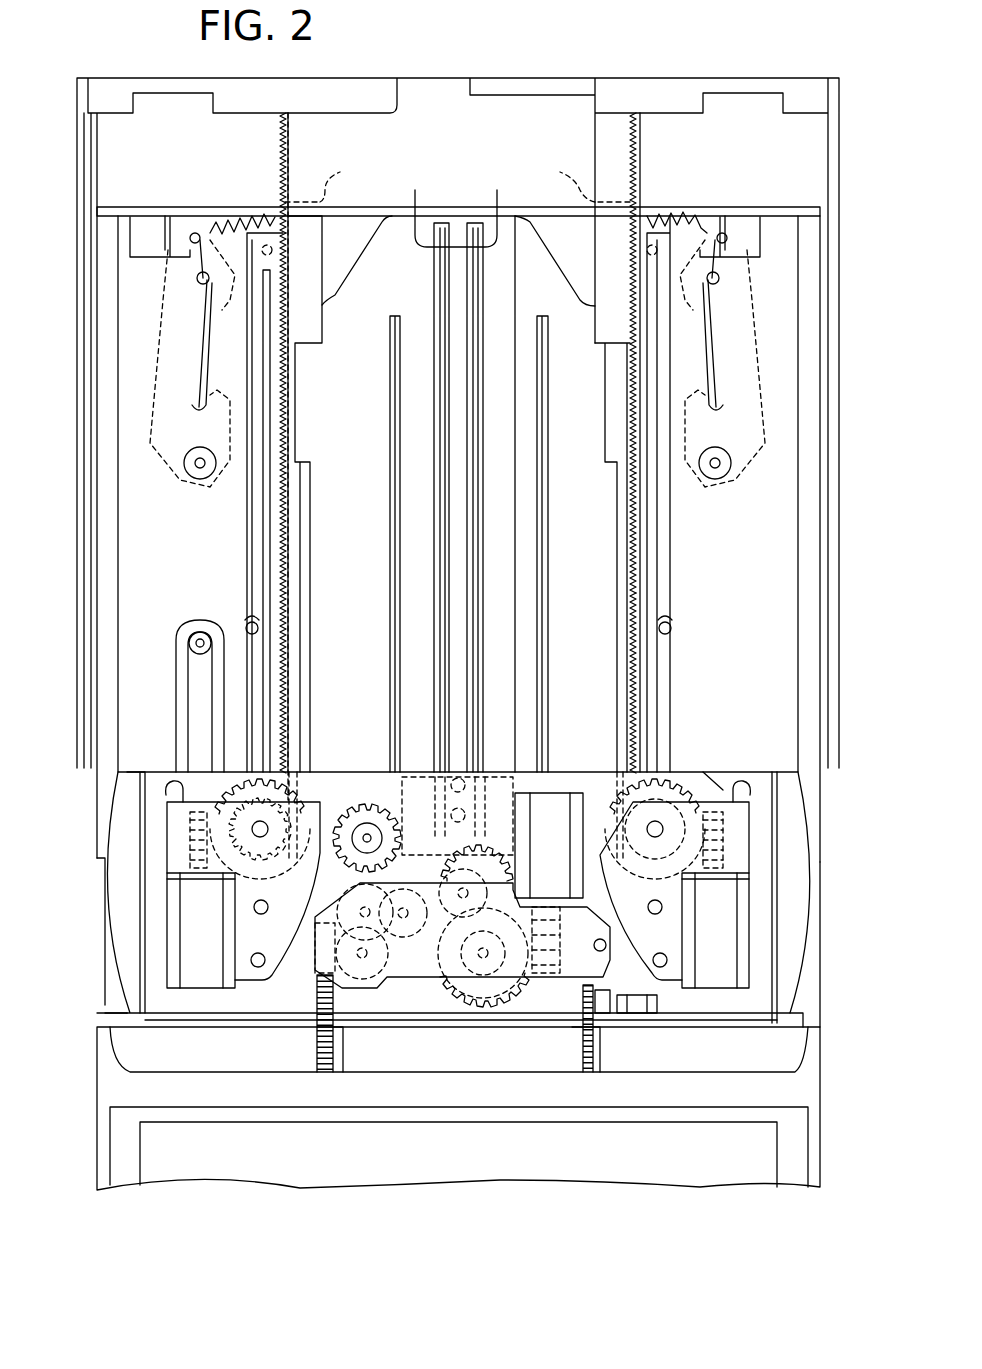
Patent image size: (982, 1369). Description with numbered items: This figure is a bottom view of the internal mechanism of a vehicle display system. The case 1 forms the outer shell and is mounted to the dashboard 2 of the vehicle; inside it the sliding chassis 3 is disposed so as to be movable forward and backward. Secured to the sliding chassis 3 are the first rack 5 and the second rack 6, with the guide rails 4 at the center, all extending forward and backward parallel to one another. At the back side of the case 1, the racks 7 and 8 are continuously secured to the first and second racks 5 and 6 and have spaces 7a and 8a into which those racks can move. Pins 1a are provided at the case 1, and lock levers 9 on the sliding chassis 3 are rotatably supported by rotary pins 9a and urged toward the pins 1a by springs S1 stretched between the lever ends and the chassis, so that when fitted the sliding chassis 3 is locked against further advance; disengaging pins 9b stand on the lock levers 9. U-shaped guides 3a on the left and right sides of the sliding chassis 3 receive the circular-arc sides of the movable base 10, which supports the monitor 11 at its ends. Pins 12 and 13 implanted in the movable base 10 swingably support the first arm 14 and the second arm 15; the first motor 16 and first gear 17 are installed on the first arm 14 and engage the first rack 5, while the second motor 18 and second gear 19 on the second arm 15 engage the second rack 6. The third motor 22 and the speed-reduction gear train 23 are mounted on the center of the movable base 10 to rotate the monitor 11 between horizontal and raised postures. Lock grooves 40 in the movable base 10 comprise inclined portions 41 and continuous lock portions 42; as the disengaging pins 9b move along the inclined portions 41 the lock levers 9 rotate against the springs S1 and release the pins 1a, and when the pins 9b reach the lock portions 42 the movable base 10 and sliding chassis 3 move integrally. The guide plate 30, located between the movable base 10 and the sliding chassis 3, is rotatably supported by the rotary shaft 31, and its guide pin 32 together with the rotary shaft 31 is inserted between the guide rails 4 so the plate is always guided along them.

The case 1 is at (838, 415).
The pin 1a is at (197, 278).
The dashboard 2 is at (458, 211).
The sliding chassis 3 is at (135, 518).
The guide 3a is at (97, 588).
The guide rail 4 is at (438, 225).
The first rack 5 is at (292, 545).
The second rack 6 is at (645, 542).
The rack 7 is at (282, 150).
The space 7a is at (334, 177).
The rack 8 is at (642, 160).
The space 8a is at (583, 177).
The lock lever 9 is at (145, 240).
The rotary pin 9a is at (200, 480).
The disengaging pin 9b is at (192, 233).
The spring S1 is at (245, 225).
The movable base 10 is at (795, 896).
The monitor 11 is at (610, 1160).
The pin 12 is at (262, 972).
The pin 13 is at (655, 975).
The first arm 14 is at (280, 975).
The second arm 15 is at (665, 985).
The first motor 16 is at (190, 945).
The first gear 17 is at (262, 860).
The second motor 18 is at (720, 975).
The second gear 19 is at (650, 815).
The third motor 22 is at (560, 830).
The speed-reduction gear train 23 is at (475, 1008).
The guide plate 30 is at (385, 800).
The rotary shaft 31 is at (435, 790).
The guide pin 32 is at (485, 800).
The lock groove 40 is at (195, 765).
The inclined portion 41 is at (180, 782).
The lock portion 42 is at (120, 798).